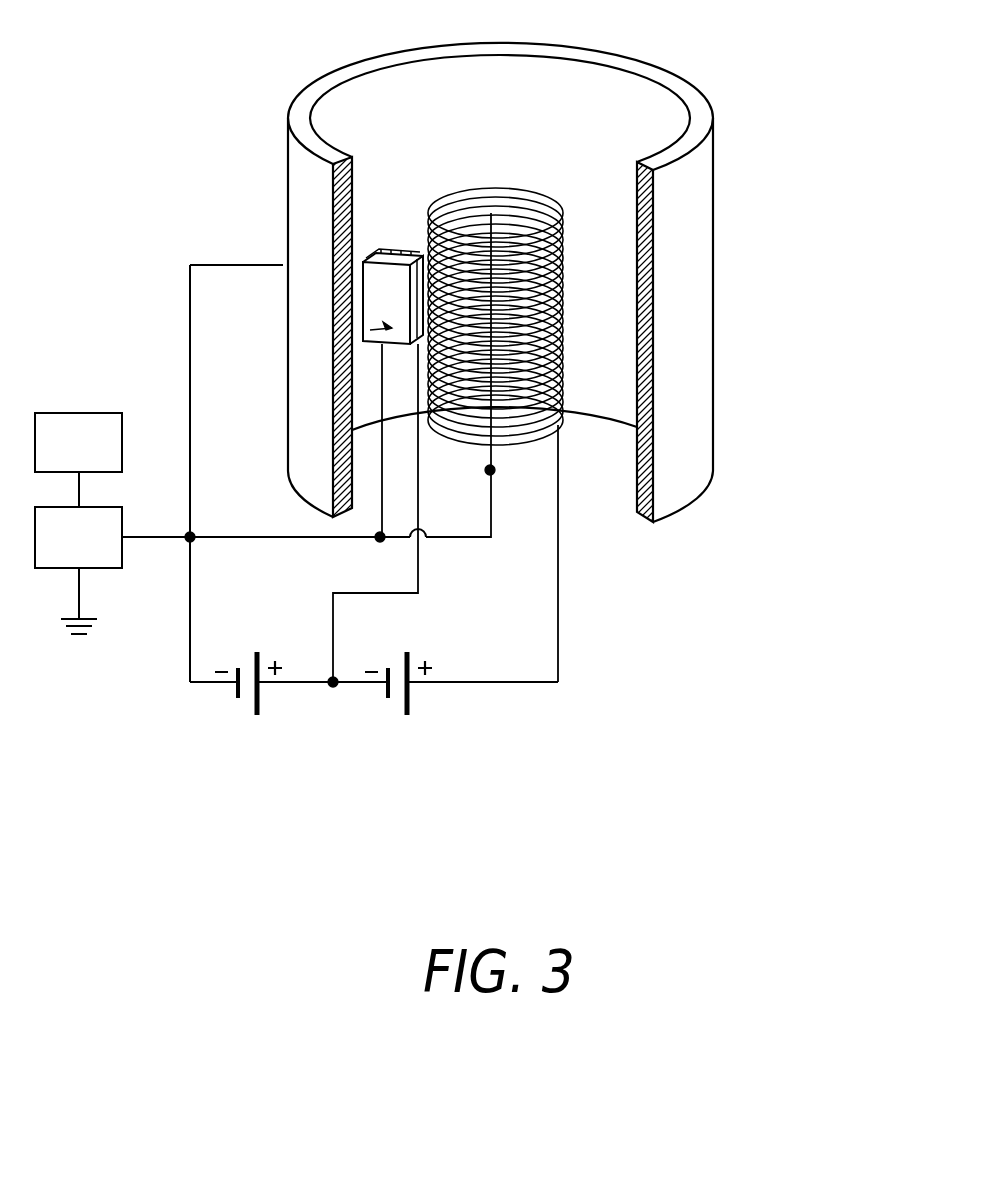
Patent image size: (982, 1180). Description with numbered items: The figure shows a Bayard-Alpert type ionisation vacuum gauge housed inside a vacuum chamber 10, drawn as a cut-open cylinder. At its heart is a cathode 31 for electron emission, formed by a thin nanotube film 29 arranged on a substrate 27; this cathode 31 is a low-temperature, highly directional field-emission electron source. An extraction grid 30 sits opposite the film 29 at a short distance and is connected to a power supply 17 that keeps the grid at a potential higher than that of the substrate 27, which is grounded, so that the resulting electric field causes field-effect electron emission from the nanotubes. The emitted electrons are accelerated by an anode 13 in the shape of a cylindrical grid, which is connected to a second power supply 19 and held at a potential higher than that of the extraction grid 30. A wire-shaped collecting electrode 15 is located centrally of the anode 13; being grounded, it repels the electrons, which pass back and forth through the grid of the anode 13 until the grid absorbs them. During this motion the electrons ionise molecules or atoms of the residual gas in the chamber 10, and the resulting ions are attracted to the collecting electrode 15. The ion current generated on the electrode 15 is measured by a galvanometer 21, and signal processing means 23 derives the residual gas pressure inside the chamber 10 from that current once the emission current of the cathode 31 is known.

The vacuum chamber 10 is at (672, 400).
The anode 13 is at (568, 270).
The collecting electrode 15 is at (493, 213).
The power supply 17 is at (268, 694).
The second power supply 19 is at (420, 690).
The galvanometer 21 is at (100, 548).
The signal processing means 23 is at (100, 452).
The substrate 27 is at (385, 312).
The nanotube film 29 is at (378, 254).
The extraction grid 30 is at (395, 248).
The cathode 31 is at (392, 328).